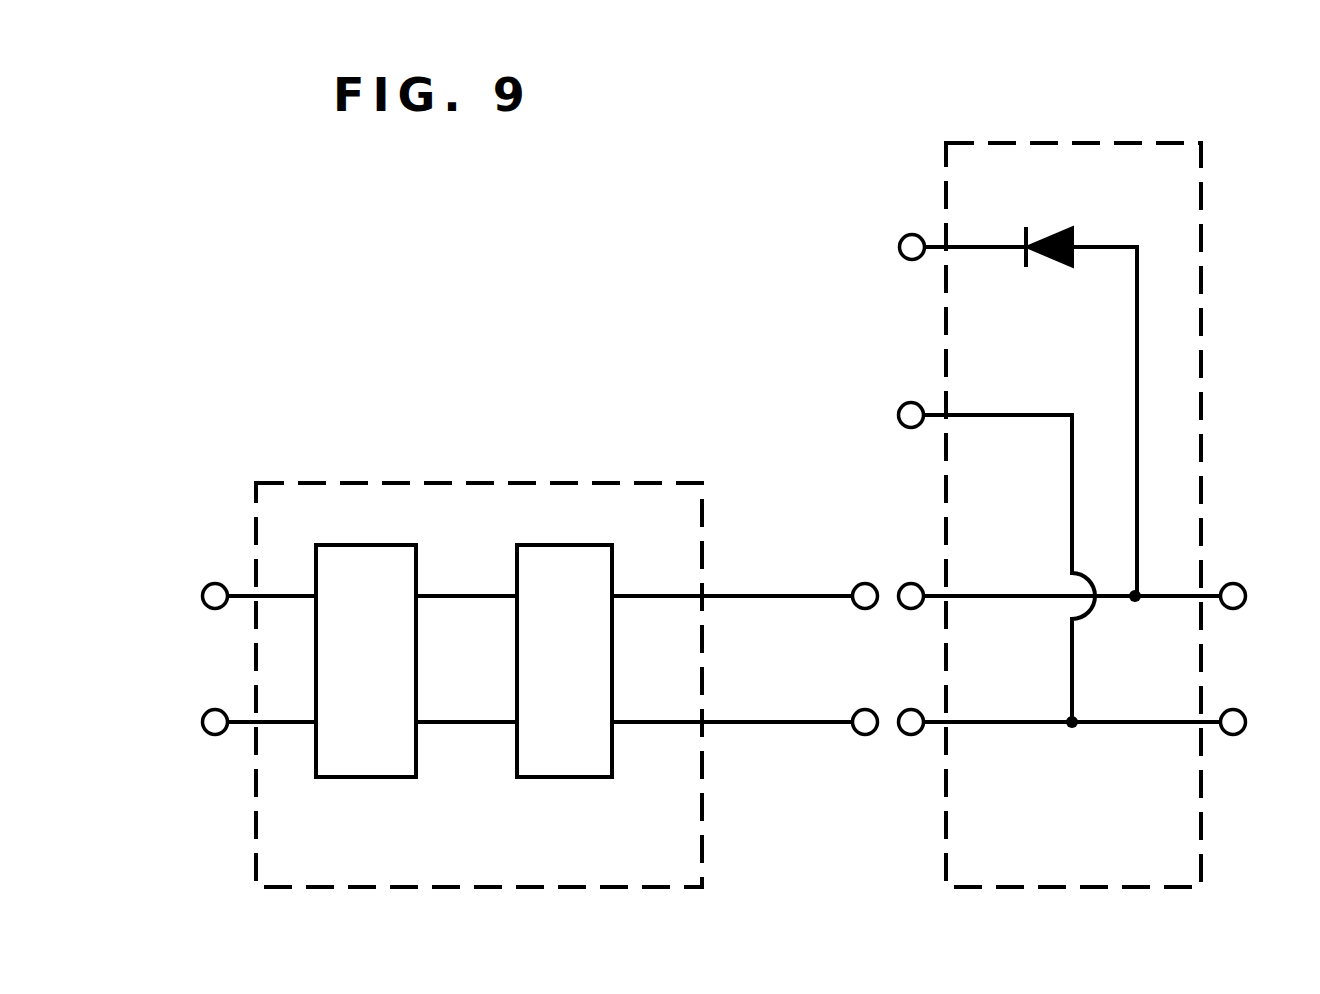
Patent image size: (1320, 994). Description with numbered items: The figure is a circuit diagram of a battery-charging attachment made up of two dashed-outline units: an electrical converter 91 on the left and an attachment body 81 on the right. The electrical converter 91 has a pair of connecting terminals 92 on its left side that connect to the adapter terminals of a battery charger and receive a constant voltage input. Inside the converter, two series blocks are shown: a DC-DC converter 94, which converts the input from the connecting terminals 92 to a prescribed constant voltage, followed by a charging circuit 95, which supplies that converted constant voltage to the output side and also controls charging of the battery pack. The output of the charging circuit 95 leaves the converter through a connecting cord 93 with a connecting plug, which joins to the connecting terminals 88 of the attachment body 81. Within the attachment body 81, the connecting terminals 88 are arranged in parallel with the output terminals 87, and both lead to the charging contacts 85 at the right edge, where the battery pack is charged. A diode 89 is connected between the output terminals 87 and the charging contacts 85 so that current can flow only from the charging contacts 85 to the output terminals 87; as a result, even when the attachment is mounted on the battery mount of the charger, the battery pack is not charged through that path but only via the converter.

The attachment body 81 is at (1203, 331).
The charging contacts 85 is at (1238, 608).
The output terminals 87 is at (910, 260).
The connecting terminals 88 is at (911, 609).
The diode 89 is at (1047, 233).
The electrical converter 91 is at (552, 481).
The connecting terminals 92 is at (209, 609).
The connecting cord 93 is at (865, 609).
The DC-DC converter 94 is at (356, 779).
The charging circuit 95 is at (568, 779).